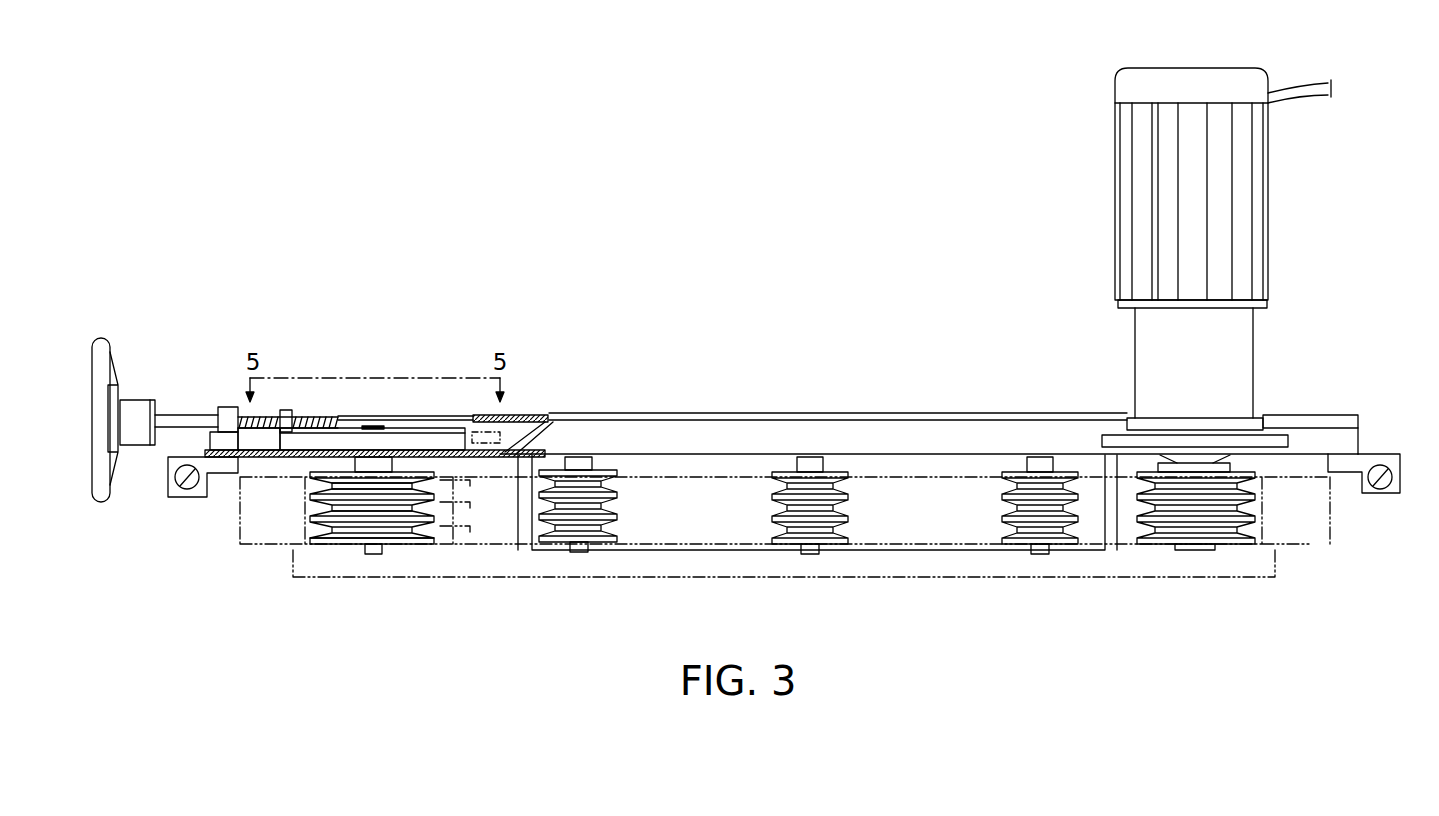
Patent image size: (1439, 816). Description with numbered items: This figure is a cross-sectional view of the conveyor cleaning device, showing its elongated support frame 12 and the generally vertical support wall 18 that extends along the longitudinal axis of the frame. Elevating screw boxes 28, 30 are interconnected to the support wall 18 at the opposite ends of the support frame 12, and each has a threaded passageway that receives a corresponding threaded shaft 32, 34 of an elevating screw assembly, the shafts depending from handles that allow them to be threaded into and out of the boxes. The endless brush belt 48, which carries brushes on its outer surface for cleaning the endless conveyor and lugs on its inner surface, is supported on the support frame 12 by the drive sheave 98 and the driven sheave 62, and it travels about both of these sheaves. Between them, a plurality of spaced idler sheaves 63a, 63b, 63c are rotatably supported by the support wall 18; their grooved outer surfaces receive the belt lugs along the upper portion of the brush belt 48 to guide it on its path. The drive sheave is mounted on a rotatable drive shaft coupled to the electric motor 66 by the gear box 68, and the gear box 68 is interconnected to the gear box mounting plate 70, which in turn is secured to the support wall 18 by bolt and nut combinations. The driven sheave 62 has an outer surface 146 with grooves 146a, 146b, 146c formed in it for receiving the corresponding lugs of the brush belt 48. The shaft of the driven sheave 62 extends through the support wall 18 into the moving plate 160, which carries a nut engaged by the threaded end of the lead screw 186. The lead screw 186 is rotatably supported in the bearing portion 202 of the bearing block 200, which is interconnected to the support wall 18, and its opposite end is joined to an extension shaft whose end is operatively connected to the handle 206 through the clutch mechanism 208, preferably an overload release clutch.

The support frame 12 is at (580, 400).
The support wall 18 is at (272, 460).
The elevating screw box 28 is at (516, 432).
The elevating screw box 30 is at (1382, 452).
The threaded shaft 32 is at (178, 480).
The threaded shaft 34 is at (1389, 488).
The endless brush belt 48 is at (698, 550).
The driven sheave 62 is at (405, 553).
The idler sheave 63a is at (598, 553).
The idler sheave 63b is at (835, 556).
The idler sheave 63c is at (1052, 556).
The electric motor 66 is at (1130, 83).
The gear box 68 is at (1194, 363).
The gear box mounting plate 70 is at (1150, 432).
The drive sheave 98 is at (1230, 556).
The outer surface 146 is at (330, 543).
The groove 146a is at (318, 540).
The groove 146b is at (425, 512).
The groove 146c is at (425, 487).
The moving plate 160 is at (392, 438).
The lead screw 186 is at (288, 405).
The bearing block 200 is at (228, 402).
The bearing portion 202 is at (222, 418).
The handle 206 is at (100, 515).
The clutch mechanism 208 is at (138, 398).